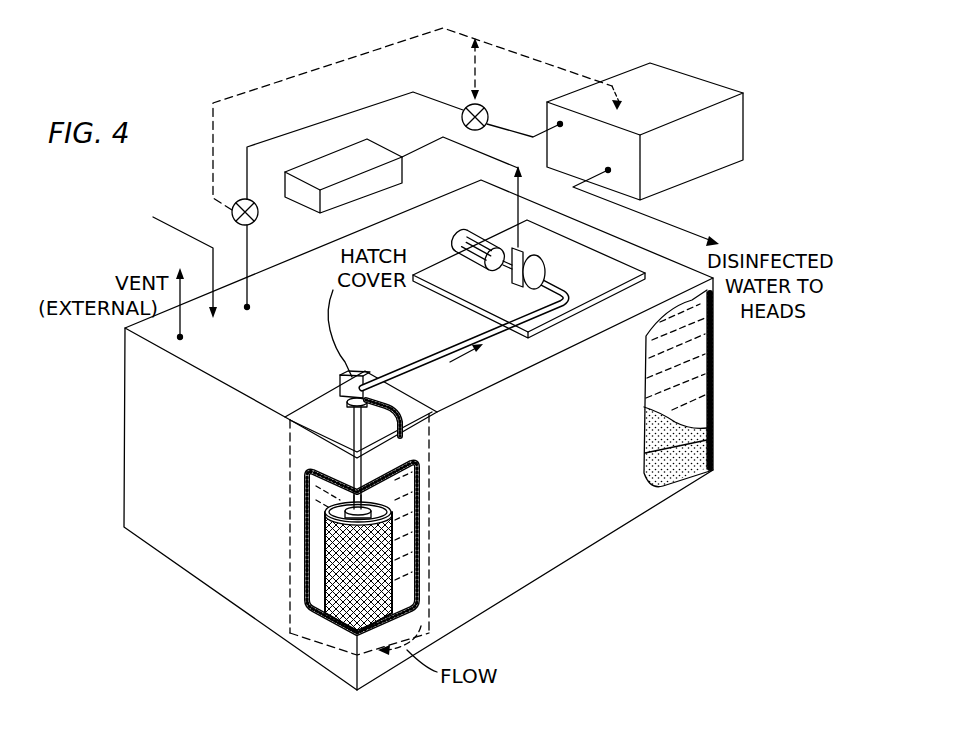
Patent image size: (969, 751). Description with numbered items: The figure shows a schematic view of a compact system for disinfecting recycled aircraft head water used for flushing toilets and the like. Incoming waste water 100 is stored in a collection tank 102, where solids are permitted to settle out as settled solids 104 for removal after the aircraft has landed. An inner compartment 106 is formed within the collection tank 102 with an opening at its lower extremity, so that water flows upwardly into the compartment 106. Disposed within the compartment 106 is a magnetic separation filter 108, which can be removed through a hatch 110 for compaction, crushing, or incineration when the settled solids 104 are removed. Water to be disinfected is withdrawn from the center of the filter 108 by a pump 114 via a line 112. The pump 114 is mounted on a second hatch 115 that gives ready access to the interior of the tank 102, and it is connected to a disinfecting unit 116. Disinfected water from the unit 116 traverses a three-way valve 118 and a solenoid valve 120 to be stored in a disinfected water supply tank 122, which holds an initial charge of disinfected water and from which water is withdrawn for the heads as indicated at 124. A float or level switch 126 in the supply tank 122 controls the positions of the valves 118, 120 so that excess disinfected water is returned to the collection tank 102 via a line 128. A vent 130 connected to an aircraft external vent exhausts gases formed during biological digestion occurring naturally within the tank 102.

The incoming waste water 100 is at (173, 228).
The collection tank 102 is at (120, 443).
The settled solids 104 is at (693, 447).
The inner compartment 106 is at (288, 604).
The magnetic separation filter 108 is at (393, 537).
The hatch 110 is at (333, 417).
The line 112 is at (420, 357).
The pump 114 is at (543, 266).
The second hatch 115 is at (570, 243).
The disinfecting unit 116 is at (373, 152).
The three-way valve 118 is at (258, 221).
The solenoid valve 120 is at (488, 108).
The disinfected water supply tank 122 is at (730, 118).
The supply to heads 124 is at (673, 222).
The float or level switch 126 is at (625, 104).
The line 128 is at (252, 288).
The vent 130 is at (183, 318).